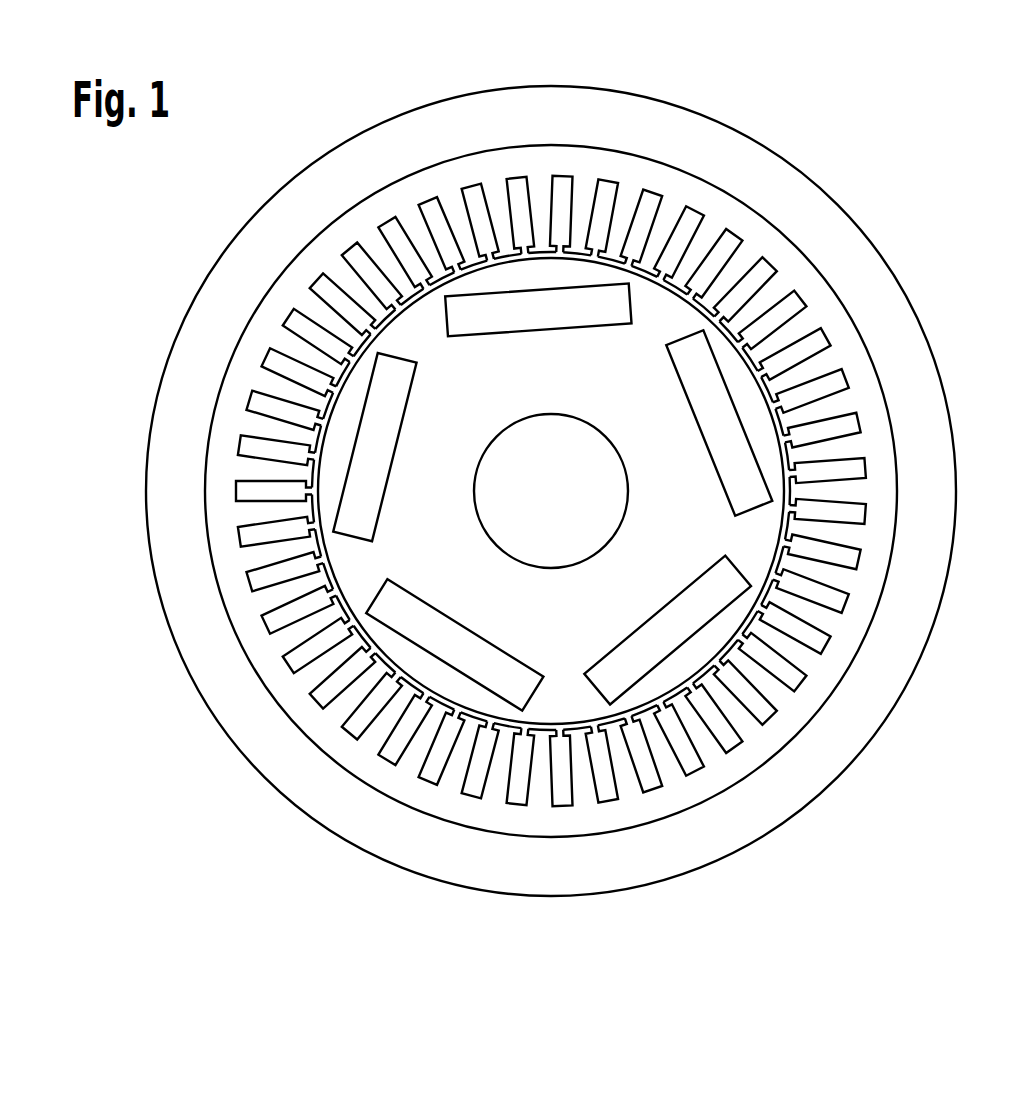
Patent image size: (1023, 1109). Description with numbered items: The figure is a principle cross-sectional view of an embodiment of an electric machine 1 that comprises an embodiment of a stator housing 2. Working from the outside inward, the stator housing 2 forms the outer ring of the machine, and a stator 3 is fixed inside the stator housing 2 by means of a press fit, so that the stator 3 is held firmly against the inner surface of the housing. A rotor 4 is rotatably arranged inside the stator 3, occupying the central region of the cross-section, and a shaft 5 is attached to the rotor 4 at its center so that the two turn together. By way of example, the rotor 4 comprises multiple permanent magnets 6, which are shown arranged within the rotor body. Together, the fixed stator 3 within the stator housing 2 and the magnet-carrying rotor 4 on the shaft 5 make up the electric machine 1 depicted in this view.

The electric machine 1 is at (868, 170).
The stator housing 2 is at (887, 292).
The stator 3 is at (867, 395).
The rotor 4 is at (569, 695).
The shaft 5 is at (597, 510).
The permanent magnets 6 is at (703, 602).